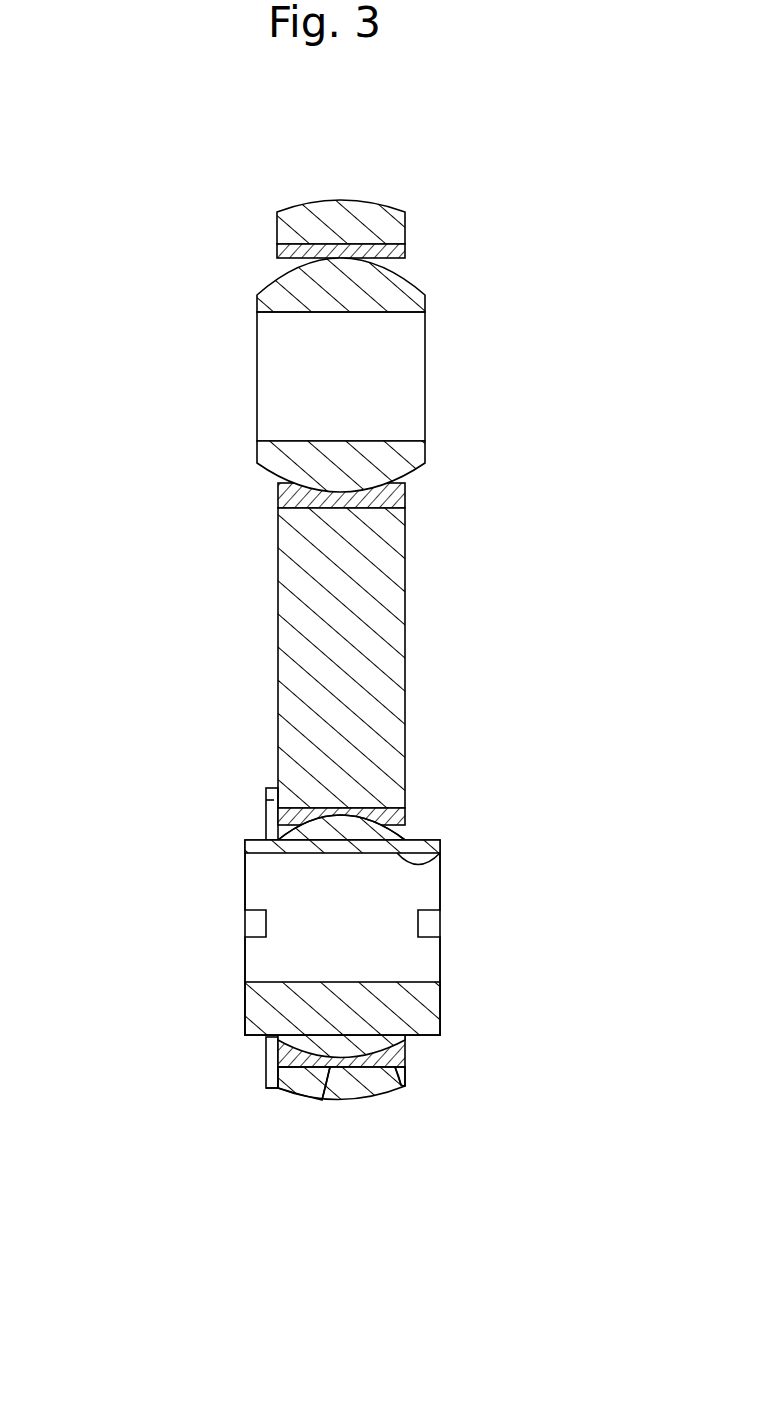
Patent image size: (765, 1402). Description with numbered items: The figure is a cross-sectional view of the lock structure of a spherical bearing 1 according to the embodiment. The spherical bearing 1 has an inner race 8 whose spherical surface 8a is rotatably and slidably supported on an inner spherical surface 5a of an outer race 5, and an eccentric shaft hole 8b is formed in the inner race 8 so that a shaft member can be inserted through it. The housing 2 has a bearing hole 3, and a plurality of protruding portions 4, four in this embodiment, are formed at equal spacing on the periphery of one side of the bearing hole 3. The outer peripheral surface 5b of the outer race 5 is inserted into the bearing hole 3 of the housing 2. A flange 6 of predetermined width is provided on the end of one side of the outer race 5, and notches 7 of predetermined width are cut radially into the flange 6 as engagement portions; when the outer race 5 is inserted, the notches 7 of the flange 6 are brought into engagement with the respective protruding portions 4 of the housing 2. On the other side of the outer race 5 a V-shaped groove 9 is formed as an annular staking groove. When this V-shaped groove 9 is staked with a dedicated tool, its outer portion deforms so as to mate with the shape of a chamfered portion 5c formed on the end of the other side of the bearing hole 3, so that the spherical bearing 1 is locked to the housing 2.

The spherical bearing 1 is at (238, 884).
The housing 2 is at (292, 1094).
The bearing hole 3 is at (325, 800).
The protruding portions 4 is at (262, 793).
The outer race 5 is at (364, 795).
The inner spherical surface 5a is at (397, 1085).
The outer peripheral surface 5b is at (328, 1098).
The chamfered portion 5c is at (408, 1062).
The flange 6 is at (263, 1093).
The notches 7 is at (266, 813).
The inner race 8 is at (444, 886).
The spherical surface 8a is at (385, 805).
The eccentric shaft hole 8b is at (437, 853).
The V-shaped groove 9 is at (405, 1052).